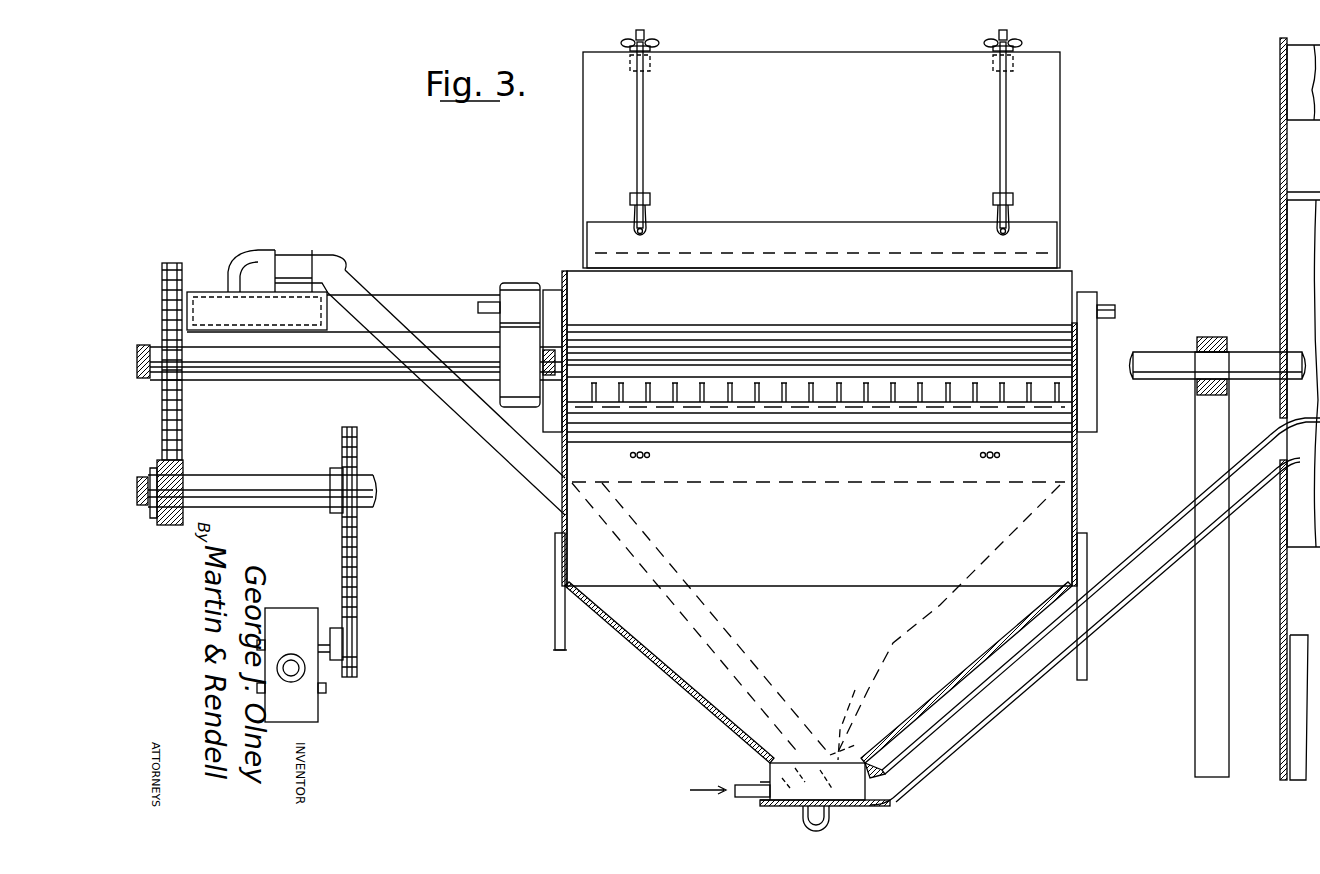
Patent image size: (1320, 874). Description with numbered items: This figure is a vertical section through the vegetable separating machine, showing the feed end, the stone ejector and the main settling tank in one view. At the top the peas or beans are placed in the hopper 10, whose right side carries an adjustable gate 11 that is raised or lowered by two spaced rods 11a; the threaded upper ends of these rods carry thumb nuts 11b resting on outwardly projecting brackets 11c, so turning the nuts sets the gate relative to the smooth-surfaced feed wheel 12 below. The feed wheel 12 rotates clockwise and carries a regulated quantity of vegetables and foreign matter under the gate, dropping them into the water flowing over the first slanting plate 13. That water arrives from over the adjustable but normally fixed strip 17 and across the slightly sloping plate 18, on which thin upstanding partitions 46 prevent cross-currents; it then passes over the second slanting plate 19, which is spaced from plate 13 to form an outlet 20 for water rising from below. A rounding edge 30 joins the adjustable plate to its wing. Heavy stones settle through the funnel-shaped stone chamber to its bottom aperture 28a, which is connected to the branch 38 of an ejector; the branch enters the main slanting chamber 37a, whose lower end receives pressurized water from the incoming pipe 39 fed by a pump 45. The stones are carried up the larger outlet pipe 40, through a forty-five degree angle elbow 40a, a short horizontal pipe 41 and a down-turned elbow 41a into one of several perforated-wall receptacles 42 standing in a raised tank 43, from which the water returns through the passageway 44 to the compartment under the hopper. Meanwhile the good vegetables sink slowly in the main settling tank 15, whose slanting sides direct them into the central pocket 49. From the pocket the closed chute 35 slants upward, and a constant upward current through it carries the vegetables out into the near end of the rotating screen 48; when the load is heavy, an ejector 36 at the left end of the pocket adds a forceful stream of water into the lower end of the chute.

The hopper 10 is at (821, 160).
The adjustable gate 11 is at (822, 245).
The spaced rods 11a is at (642, 128).
The thumb nuts 11b is at (632, 52).
The outwardly projecting brackets 11c is at (650, 51).
The feed wheel 12 is at (819, 428).
The first slanting plate 13 is at (758, 410).
The main settling tank 15 is at (820, 648).
The adjustable but normally fixed strip 17 is at (877, 360).
The slightly sloping plate 18 is at (803, 400).
The second slanting plate 19 is at (688, 423).
The outlet 20 is at (722, 415).
The bottom aperture 28a is at (949, 618).
The rounding edge 30 is at (590, 437).
The closed chute 35 is at (1092, 611).
The ejector 36 is at (746, 798).
The main slanting chamber 37a is at (852, 744).
The branch 38 is at (859, 725).
The incoming pipe 39 is at (877, 812).
The outlet pipe 40 is at (510, 461).
The angle elbow 40a is at (343, 260).
The short horizontal pipe 41 is at (298, 262).
The down-turned elbow 41a is at (248, 254).
The perforated-wall receptacles 42 is at (223, 298).
The tank 43 is at (202, 292).
The passageway 44 is at (458, 317).
The pump 45 is at (283, 623).
The thin upstanding partitions 46 is at (973, 404).
The rotating screen 48 is at (1300, 409).
The pocket 49 is at (786, 790).